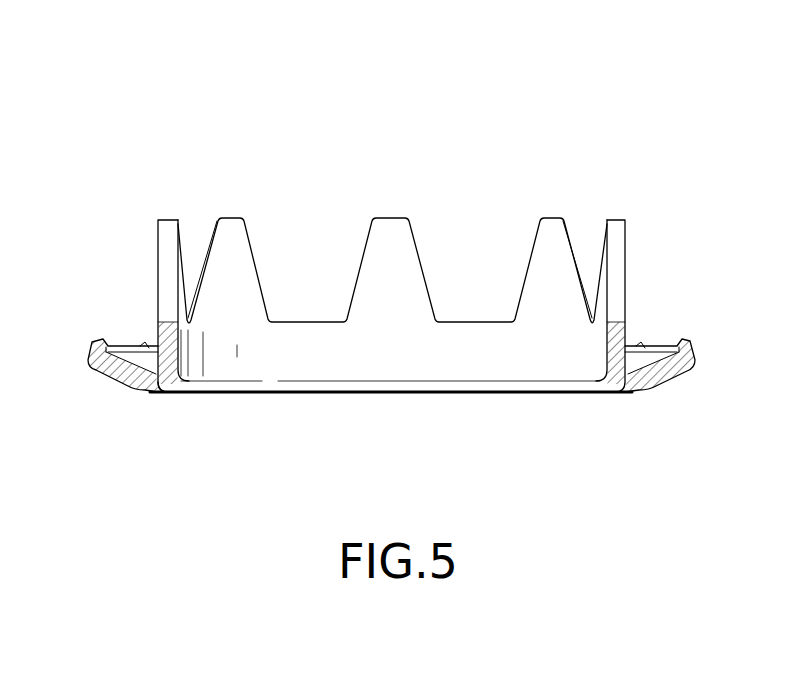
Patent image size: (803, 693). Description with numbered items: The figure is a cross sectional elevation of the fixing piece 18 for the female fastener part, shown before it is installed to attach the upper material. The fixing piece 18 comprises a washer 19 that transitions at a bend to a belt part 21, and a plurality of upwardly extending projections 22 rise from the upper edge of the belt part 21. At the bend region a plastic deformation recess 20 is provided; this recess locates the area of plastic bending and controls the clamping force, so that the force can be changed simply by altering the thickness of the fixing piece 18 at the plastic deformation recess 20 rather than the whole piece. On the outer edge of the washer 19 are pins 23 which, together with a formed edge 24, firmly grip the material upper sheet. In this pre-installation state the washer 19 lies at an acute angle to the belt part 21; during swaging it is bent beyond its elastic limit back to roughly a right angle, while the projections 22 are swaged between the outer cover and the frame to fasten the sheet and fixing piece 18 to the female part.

The fixing piece 18 is at (374, 254).
The washer 19 is at (106, 371).
The plastic deformation recess 20 is at (143, 393).
The belt part 21 is at (297, 363).
The upwardly extending projections 22 is at (380, 265).
The pins 23 is at (144, 341).
The formed edge 24 is at (658, 352).